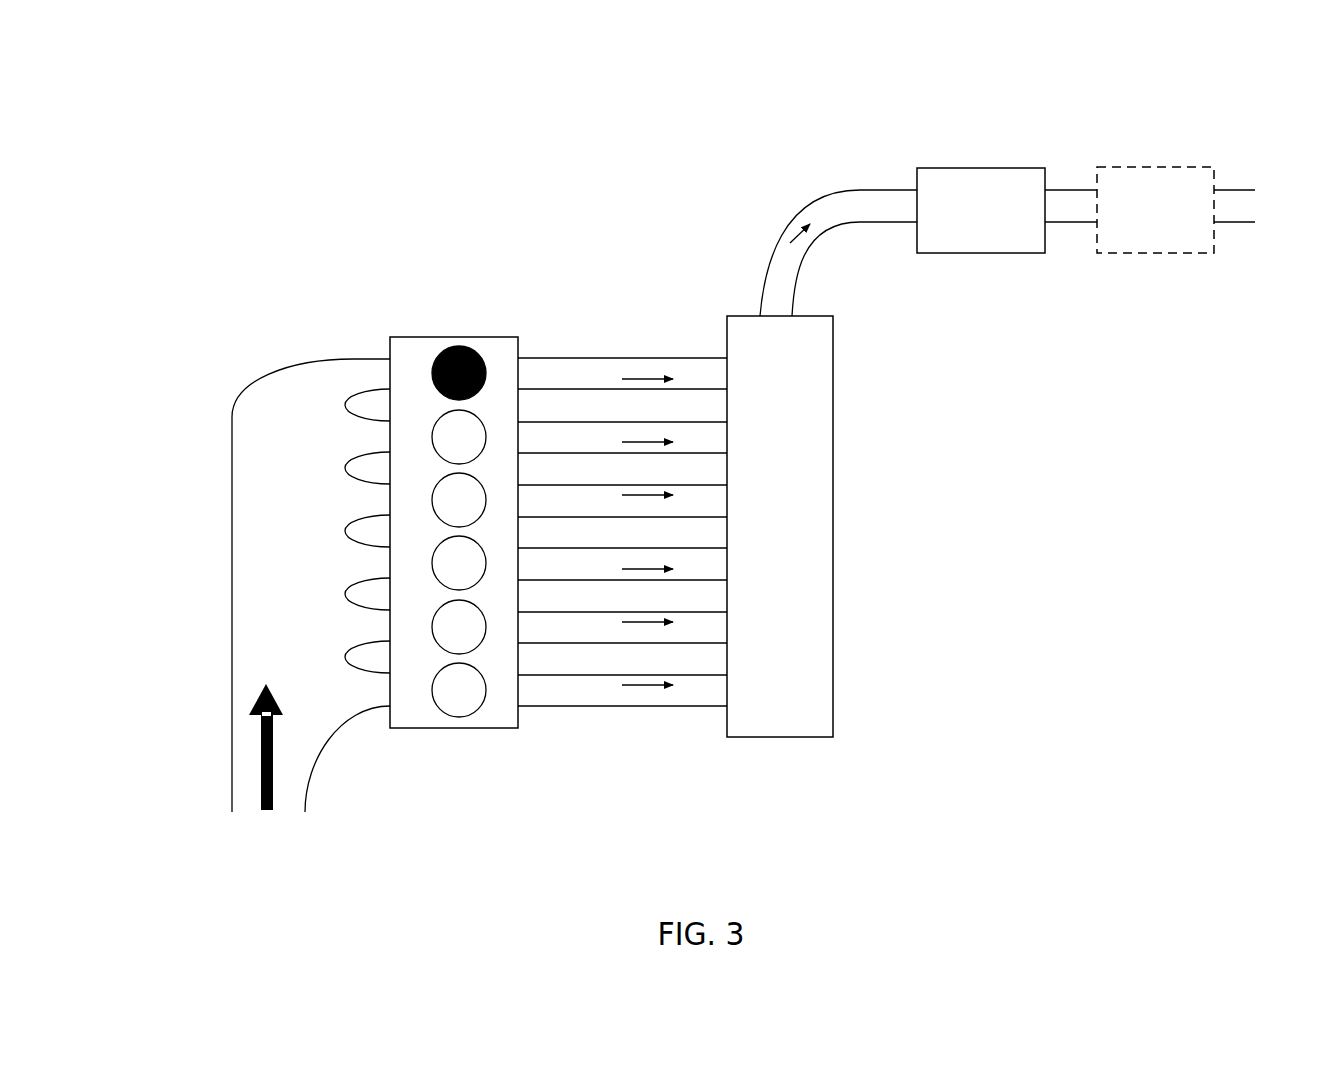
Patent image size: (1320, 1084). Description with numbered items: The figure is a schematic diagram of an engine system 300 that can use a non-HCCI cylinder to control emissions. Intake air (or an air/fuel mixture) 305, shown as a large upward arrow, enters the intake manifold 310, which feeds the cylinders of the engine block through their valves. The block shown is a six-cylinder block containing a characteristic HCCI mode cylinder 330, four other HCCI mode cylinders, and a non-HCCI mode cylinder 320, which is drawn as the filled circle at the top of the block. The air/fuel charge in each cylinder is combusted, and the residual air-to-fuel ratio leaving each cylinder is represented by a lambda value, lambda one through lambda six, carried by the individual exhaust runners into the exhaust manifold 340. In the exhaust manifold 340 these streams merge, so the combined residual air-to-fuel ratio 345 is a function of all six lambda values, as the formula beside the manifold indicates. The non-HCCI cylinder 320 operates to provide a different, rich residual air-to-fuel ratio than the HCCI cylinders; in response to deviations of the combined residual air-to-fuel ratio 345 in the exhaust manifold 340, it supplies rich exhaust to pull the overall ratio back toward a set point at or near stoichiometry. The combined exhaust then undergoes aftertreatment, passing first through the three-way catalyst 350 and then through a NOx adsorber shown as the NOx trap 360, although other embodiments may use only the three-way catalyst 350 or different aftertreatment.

The engine system 300 is at (420, 150).
The intake air 305 is at (268, 812).
The intake manifold 310 is at (286, 368).
The non-HCCI mode cylinder 320 is at (469, 347).
The characteristic HCCI mode cylinder 330 is at (456, 717).
The exhaust manifold 340 is at (833, 459).
The combined residual air-to-fuel ratio 345 is at (772, 280).
The 3-way catalyst 350 is at (985, 168).
The NOx trap 360 is at (1163, 167).